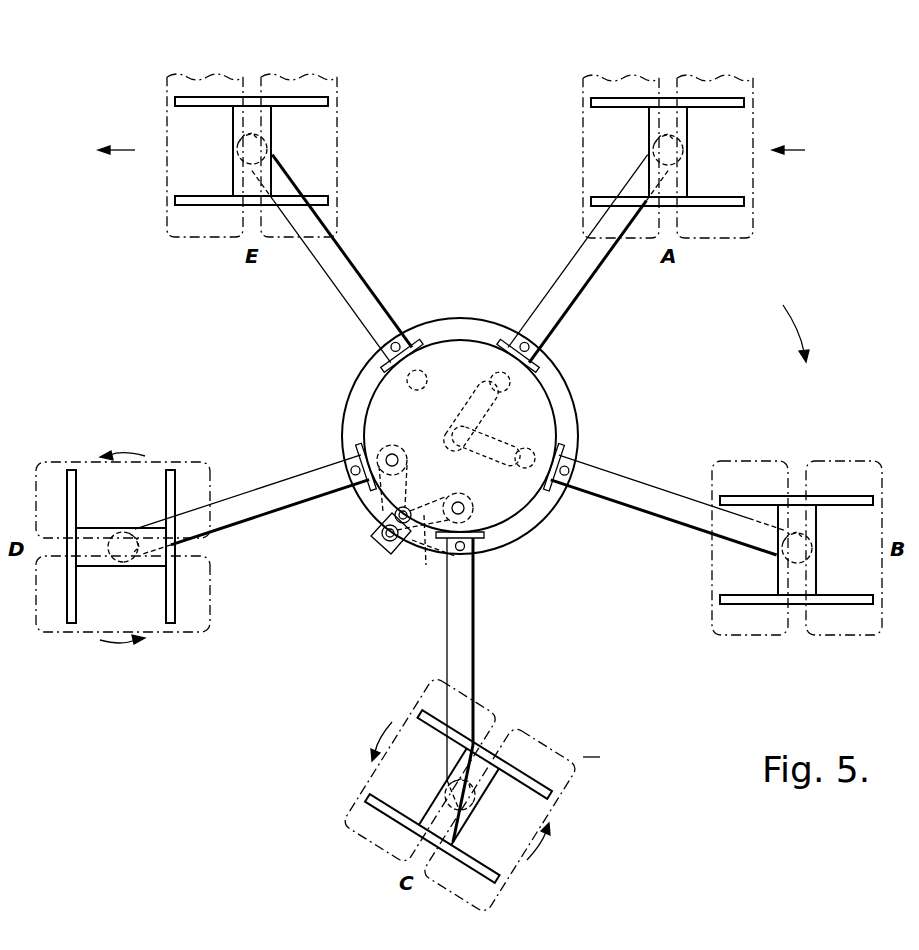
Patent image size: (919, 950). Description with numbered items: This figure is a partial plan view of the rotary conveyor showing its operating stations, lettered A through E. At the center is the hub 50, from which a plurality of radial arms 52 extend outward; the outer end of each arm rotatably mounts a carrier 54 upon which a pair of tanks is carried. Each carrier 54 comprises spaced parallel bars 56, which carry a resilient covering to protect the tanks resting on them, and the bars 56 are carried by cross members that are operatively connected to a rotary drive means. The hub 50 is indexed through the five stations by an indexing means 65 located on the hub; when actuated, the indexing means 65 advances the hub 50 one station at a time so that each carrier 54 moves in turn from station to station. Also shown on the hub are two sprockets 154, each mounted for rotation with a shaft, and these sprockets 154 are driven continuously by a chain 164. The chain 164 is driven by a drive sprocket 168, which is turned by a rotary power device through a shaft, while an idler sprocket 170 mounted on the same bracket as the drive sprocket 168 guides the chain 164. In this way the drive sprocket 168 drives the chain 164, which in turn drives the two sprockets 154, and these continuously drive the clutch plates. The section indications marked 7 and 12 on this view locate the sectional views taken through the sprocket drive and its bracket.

The hub 50 is at (546, 392).
The radial arms 52 is at (635, 507).
The carriers 54 is at (679, 172).
The spaced parallel bars 56 is at (667, 102).
The indexing means 65 is at (458, 403).
The sprocket 154 is at (380, 456).
The chain 164 is at (436, 540).
The drive sprocket 168 is at (378, 532).
The idler sprocket 170 is at (404, 530).
The section line 7- 7 is at (545, 318).
The section line 12- 12 is at (381, 510).